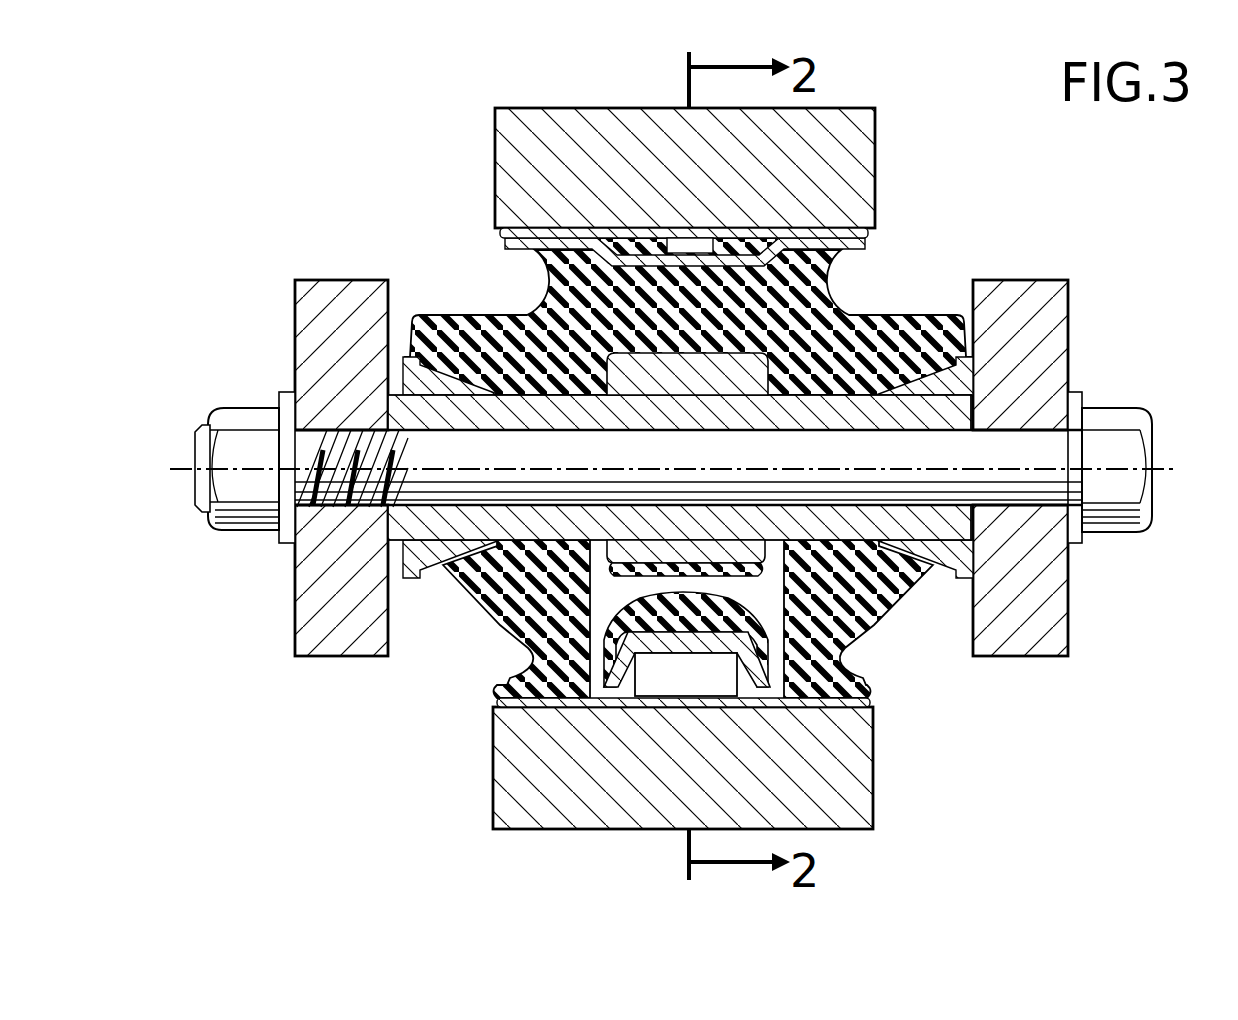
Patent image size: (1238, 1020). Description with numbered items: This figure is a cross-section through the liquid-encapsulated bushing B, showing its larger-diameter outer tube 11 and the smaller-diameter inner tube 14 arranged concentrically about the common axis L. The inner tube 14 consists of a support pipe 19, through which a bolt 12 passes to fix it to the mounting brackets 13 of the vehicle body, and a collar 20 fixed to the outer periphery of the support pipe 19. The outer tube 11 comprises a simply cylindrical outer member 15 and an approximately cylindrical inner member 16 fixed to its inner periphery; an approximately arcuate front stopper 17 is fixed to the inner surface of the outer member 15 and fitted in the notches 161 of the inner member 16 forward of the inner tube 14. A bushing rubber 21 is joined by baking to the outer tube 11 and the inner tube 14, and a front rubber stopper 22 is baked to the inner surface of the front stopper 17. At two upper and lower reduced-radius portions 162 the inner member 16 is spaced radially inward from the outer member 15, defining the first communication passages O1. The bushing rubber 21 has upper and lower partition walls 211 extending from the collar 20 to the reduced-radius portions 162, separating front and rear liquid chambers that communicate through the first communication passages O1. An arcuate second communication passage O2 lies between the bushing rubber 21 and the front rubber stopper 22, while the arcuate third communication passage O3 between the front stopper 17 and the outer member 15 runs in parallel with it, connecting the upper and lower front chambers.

The outer tube 11 is at (838, 222).
The bolt 12 is at (1135, 407).
The mounting brackets 13 is at (342, 293).
The inner tube 14 is at (452, 546).
The outer member 15 is at (560, 232).
The inner member 16 is at (528, 252).
The notches 161 is at (785, 702).
The reduced-radius portions 162 is at (647, 250).
The front stopper 17 is at (661, 658).
The support pipe 19 is at (822, 415).
The collar 20 is at (650, 557).
The bushing rubber 21 is at (575, 135).
The partition walls 211 is at (703, 302).
The front rubber stopper 22 is at (718, 603).
The first communication passages O1 is at (685, 240).
The second communication passages O2 is at (688, 590).
The third communication passage O3 is at (713, 692).
The liquid-encapsulated bushing B is at (920, 244).
The common axis L is at (1172, 468).